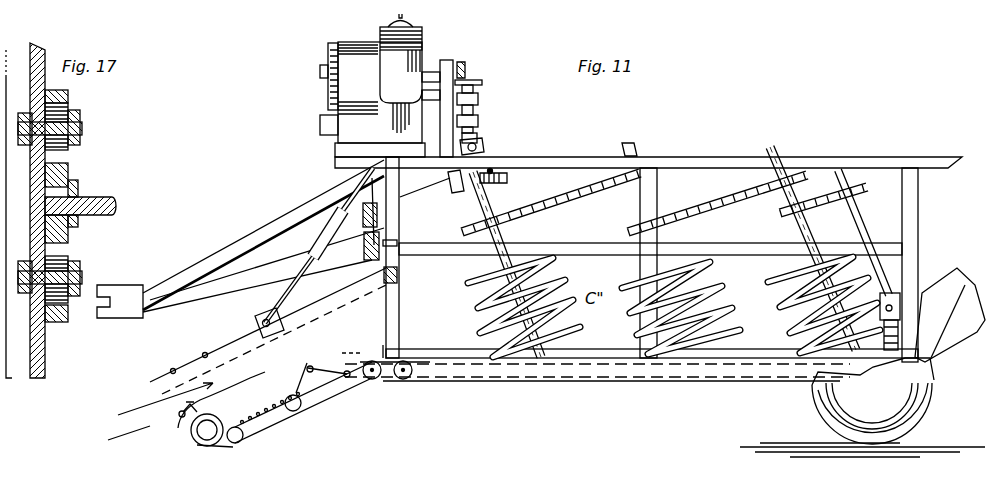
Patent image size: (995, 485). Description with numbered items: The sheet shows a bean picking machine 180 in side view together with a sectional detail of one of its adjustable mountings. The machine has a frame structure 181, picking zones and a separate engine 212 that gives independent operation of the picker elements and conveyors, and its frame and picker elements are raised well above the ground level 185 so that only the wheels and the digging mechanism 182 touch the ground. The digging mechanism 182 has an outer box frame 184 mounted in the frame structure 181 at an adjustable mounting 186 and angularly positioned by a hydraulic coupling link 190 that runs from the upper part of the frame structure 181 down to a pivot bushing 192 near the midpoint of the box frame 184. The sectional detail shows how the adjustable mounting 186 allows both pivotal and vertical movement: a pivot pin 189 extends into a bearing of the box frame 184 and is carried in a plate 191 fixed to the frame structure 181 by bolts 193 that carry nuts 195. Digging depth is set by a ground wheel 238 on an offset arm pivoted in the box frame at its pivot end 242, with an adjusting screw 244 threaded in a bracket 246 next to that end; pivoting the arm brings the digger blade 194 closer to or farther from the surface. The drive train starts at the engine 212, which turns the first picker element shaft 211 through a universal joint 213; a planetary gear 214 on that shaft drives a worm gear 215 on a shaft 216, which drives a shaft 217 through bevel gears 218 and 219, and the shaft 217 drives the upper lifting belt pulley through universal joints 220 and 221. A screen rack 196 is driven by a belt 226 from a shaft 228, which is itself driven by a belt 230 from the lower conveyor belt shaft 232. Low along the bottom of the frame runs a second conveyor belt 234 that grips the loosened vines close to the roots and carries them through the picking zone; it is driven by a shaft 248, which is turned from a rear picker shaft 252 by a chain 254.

In FIG. 11, the bean picking machine 180 is at (714, 107).
In FIG. 17, the frame structure 181 is at (42, 62).
In FIG. 11, the frame structure 181 is at (880, 162).
In FIG. 11, the digging mechanism 182 is at (145, 406).
In FIG. 11, the outer box frame 184 is at (193, 447).
In FIG. 11, the ground level 185 is at (775, 450).
In FIG. 17, the adjustable mounting 186 is at (120, 116).
In FIG. 11, the adjustable mounting 186 is at (398, 282).
In FIG. 17, the pivot pin 189 is at (105, 200).
In FIG. 11, the hydraulic coupling link 190 is at (267, 228).
In FIG. 17, the plate 191 is at (65, 175).
In FIG. 11, the pivot bushing 192 is at (260, 322).
In FIG. 17, the bolt 193 is at (80, 123).
In FIG. 11, the digger blade 194 is at (204, 452).
In FIG. 17, the nut 195 is at (23, 113).
In FIG. 11, the screen rack 196 is at (250, 445).
In FIG. 11, the first picker element shaft 211 is at (497, 186).
In FIG. 11, the engine 212 is at (358, 83).
In FIG. 11, the universal joint 213 is at (478, 143).
In FIG. 11, the planetary gear 214 is at (492, 170).
In FIG. 11, the worm gear 215 is at (507, 178).
In FIG. 11, the shaft 216 is at (420, 197).
In FIG. 11, the shaft 217 is at (393, 243).
In FIG. 11, the bevel gear 218 is at (363, 210).
In FIG. 11, the bevel gear 219 is at (330, 212).
In FIG. 11, the universal joint 220 is at (358, 231).
In FIG. 11, the universal joint 221 is at (350, 280).
In FIG. 11, the belt 226 is at (338, 395).
In FIG. 11, the shaft 228 is at (372, 373).
In FIG. 11, the belt 230 is at (380, 380).
In FIG. 11, the lower conveyor belt shaft 232 is at (403, 373).
In FIG. 11, the second conveyor belt 234 is at (380, 347).
In FIG. 11, the ground wheel 238 is at (200, 431).
In FIG. 11, the pivot end of arm 242 is at (181, 415).
In FIG. 11, the adjusting screw 244 is at (112, 438).
In FIG. 11, the bracket 246 is at (193, 423).
In FIG. 11, the shaft 248 is at (864, 217).
In FIG. 11, the rear picker shaft 252 is at (781, 147).
In FIG. 11, the chain 254 is at (823, 197).